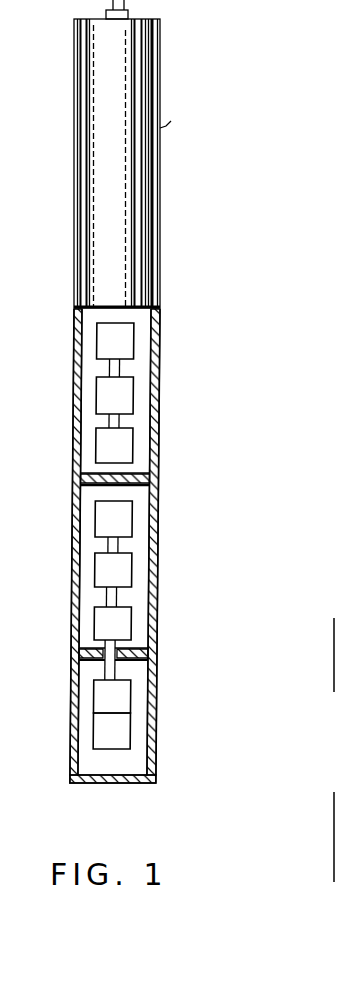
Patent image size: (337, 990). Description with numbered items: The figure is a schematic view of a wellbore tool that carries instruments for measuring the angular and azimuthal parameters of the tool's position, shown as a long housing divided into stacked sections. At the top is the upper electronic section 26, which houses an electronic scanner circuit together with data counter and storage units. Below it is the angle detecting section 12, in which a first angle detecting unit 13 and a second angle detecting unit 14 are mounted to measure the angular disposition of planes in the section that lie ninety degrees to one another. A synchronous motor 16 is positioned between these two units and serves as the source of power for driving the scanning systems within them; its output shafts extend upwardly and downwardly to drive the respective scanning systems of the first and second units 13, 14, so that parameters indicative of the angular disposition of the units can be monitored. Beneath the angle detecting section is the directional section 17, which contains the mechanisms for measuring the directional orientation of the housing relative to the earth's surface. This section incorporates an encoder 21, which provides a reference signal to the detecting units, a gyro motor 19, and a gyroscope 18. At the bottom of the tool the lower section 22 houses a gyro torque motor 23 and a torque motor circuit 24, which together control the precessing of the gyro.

The upper electronic section 26 is at (74, 90).
The angle detecting section 12 is at (208, 384).
The first angle detecting unit 13 is at (134, 345).
The synchronous motor 16 is at (97, 396).
The second angle detecting unit 14 is at (134, 452).
The directional section 17 is at (208, 518).
The encoder 21 is at (97, 514).
The gyro motor 19 is at (97, 560).
The gyroscope 18 is at (134, 630).
The lower section 22 is at (208, 718).
The gyro torque motor 23 is at (107, 673).
The torque motor circuit 24 is at (97, 733).